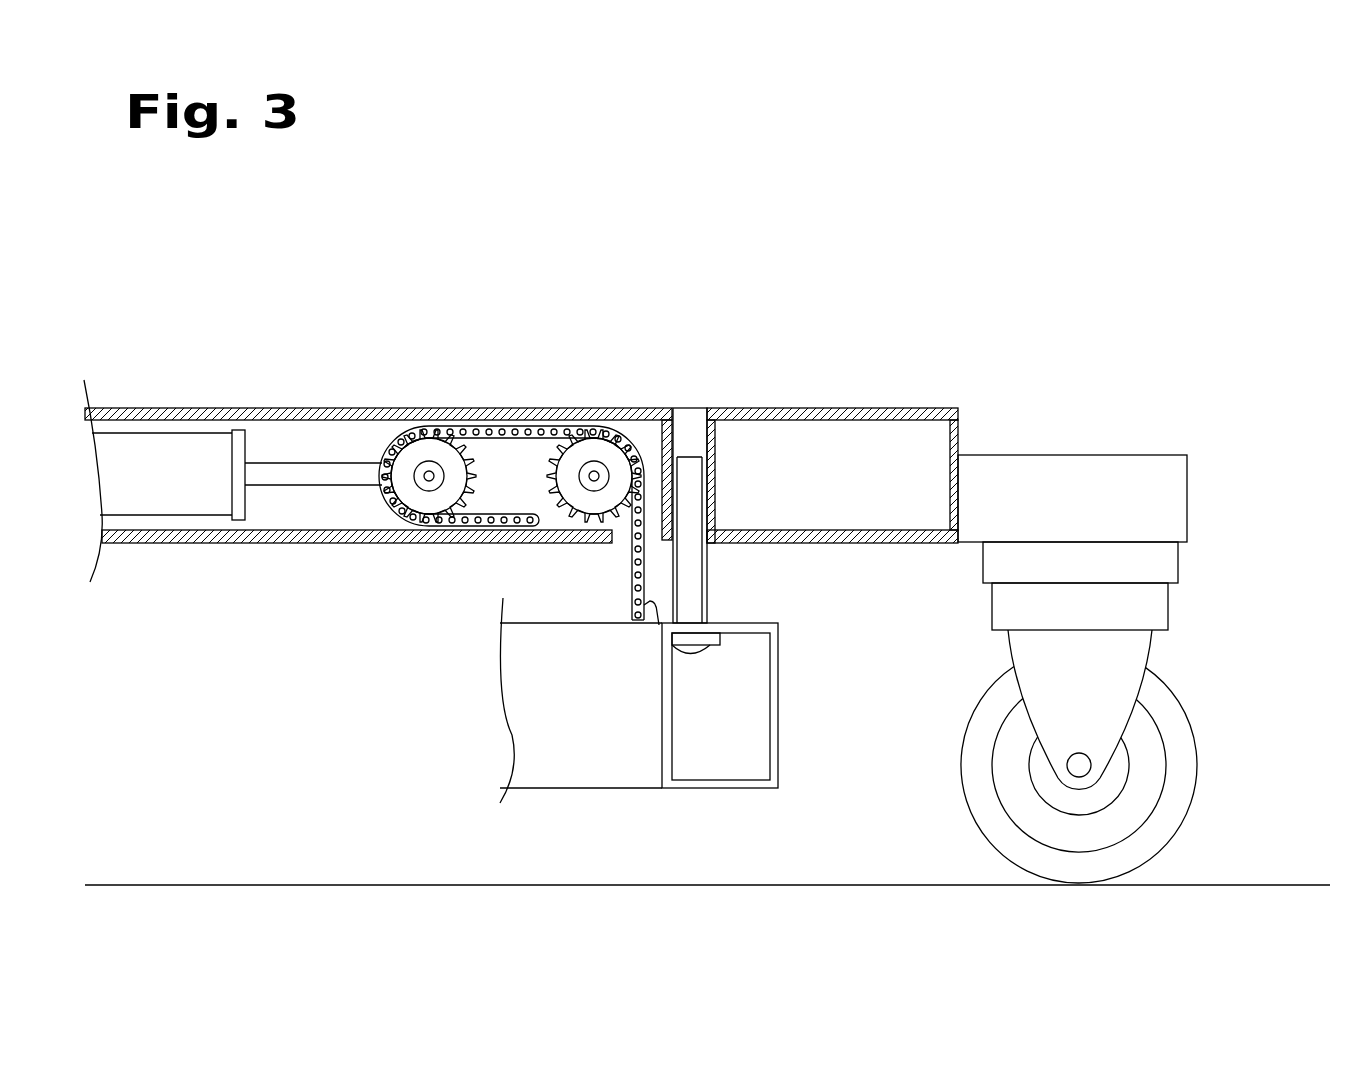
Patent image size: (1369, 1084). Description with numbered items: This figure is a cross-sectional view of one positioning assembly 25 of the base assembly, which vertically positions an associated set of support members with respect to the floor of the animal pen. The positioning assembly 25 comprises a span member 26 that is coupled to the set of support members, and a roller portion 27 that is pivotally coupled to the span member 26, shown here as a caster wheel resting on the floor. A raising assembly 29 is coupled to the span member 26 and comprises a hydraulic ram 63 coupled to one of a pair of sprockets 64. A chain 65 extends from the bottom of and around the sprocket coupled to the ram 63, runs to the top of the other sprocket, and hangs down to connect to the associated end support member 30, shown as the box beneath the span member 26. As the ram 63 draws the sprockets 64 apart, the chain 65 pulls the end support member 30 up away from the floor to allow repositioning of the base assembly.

The positioning assembly 25 is at (737, 385).
The span member 26 is at (873, 412).
The roller portion 27 is at (1183, 763).
The raising assembly 29 is at (280, 495).
The end support member 30 is at (777, 738).
The ram 63 is at (133, 450).
The sprocket 64 is at (430, 448).
The chain 65 is at (527, 428).